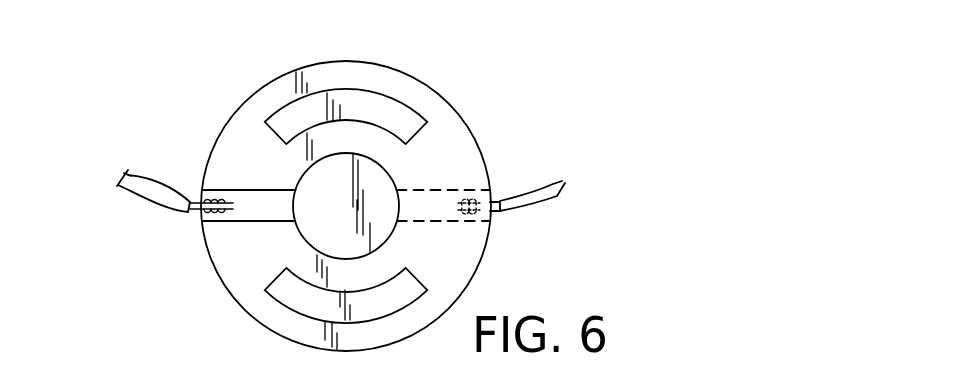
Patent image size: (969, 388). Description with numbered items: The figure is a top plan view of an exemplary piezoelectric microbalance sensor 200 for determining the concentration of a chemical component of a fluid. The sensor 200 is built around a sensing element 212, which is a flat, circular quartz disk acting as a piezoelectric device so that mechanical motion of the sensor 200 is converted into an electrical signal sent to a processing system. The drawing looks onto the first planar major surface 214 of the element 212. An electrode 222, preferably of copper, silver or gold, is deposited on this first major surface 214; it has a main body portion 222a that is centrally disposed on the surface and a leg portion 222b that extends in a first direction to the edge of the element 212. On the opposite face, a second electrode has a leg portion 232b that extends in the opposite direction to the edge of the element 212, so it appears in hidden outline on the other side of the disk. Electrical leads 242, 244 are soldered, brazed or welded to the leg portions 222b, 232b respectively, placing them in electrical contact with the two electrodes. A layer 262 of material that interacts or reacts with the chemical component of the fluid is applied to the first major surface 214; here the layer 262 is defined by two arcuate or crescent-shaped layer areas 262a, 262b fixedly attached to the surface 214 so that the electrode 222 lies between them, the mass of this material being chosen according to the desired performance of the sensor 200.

The sensor 200 is at (524, 93).
The sensing element 212 is at (456, 105).
The first planar major surface 214 is at (460, 147).
The electrode 222 is at (296, 239).
The main body portion 222a is at (308, 182).
The leg portion 222b is at (257, 212).
The leg portion 232b is at (433, 218).
The electrical lead 242 is at (138, 197).
The electrical lead 244 is at (525, 200).
The layer 262 is at (379, 87).
The arcuate layer area 262a is at (347, 104).
The arcuate layer area 262b is at (288, 297).